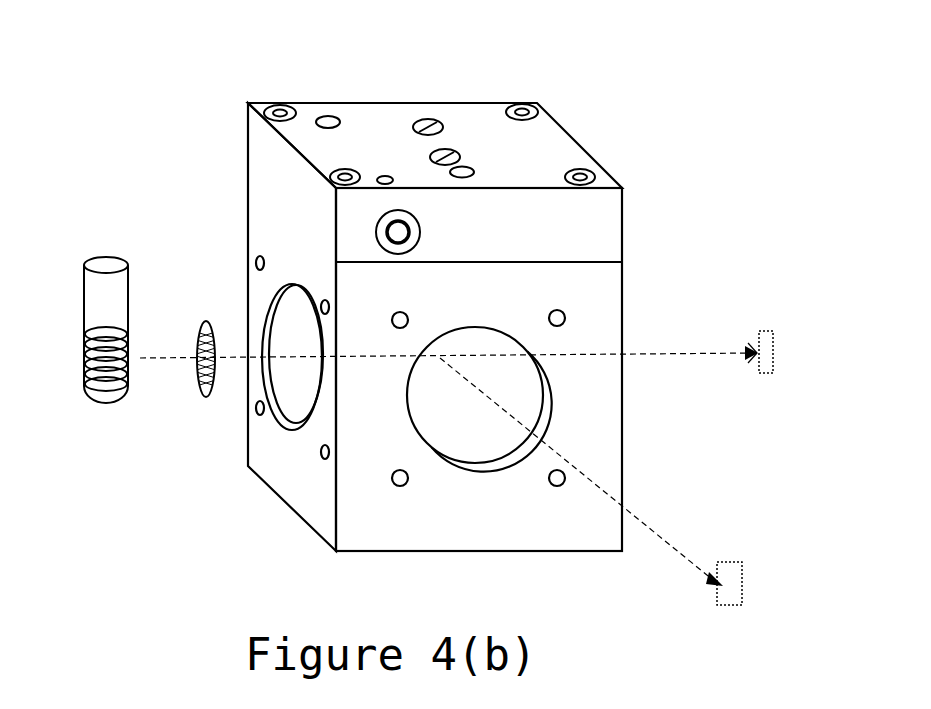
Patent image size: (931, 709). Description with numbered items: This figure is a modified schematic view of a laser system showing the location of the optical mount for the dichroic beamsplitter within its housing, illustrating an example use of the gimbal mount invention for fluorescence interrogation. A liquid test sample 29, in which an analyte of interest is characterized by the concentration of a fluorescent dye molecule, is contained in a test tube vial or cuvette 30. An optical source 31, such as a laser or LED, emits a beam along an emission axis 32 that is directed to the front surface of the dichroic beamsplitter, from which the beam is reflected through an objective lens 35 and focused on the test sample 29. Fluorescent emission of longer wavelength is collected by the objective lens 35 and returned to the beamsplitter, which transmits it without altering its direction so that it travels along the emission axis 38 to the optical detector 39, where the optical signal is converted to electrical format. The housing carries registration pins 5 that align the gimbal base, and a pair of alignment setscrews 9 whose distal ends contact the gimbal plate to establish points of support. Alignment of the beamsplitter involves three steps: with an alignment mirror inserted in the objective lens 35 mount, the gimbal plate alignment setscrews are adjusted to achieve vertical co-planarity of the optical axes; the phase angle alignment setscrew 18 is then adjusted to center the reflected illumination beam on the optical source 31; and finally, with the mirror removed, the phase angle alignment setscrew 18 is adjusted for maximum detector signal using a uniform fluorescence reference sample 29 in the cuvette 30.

The registration pins 5 is at (338, 115).
The alignment setscrews 9 is at (464, 165).
The phase angle alignment setscrew 18 is at (424, 230).
The liquid test sample 29 is at (93, 406).
The test tube vial or cuvette 30 is at (90, 261).
The optical source 31 is at (748, 567).
The emission axis 32 is at (676, 551).
The objective lens 35 is at (202, 408).
The emission axis 38 is at (689, 355).
The optical detector 39 is at (782, 359).